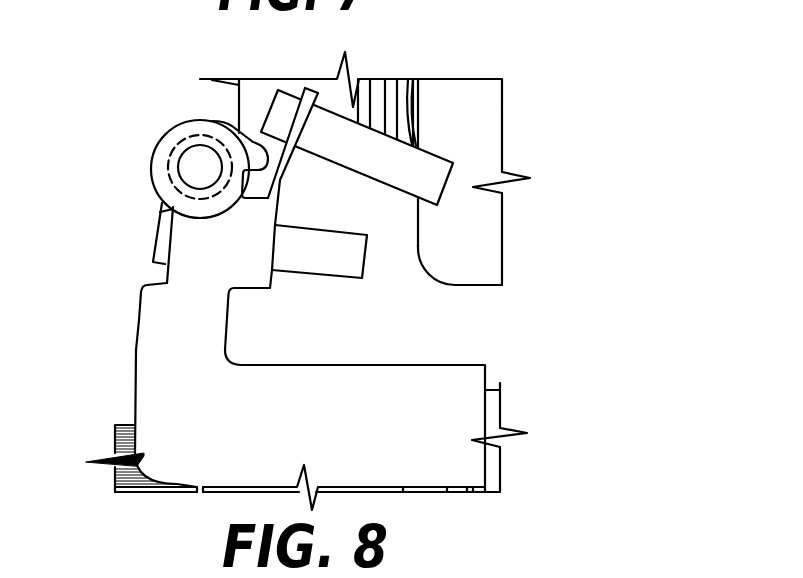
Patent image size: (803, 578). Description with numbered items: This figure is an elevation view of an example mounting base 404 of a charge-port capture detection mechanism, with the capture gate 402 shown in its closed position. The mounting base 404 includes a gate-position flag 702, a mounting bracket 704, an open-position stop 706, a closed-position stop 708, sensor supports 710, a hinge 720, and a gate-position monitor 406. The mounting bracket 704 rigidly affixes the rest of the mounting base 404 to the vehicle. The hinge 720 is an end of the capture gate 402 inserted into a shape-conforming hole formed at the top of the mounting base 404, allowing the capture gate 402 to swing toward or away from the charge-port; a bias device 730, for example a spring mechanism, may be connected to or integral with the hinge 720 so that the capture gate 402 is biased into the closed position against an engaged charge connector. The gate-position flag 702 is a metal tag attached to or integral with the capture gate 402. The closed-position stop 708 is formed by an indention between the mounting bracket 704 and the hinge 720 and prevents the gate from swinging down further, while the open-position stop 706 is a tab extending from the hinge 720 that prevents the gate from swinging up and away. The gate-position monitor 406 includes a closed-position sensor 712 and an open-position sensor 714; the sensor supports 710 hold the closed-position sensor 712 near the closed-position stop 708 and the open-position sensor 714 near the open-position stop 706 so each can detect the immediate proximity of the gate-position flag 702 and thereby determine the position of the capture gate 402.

The capture gate 402 is at (180, 168).
The mounting base 404 is at (524, 85).
The gate-position monitor 406 is at (383, 282).
The gate-position flag 702 is at (157, 232).
The mounting bracket 704 is at (143, 363).
The open-position stop 706 is at (253, 143).
The closed-position stop 708 is at (158, 275).
The sensor supports 710 is at (268, 249).
The closed-position sensor 712 is at (335, 258).
The open-position sensor 714 is at (417, 177).
The hinge 720 is at (173, 133).
The bias device 730 is at (186, 163).